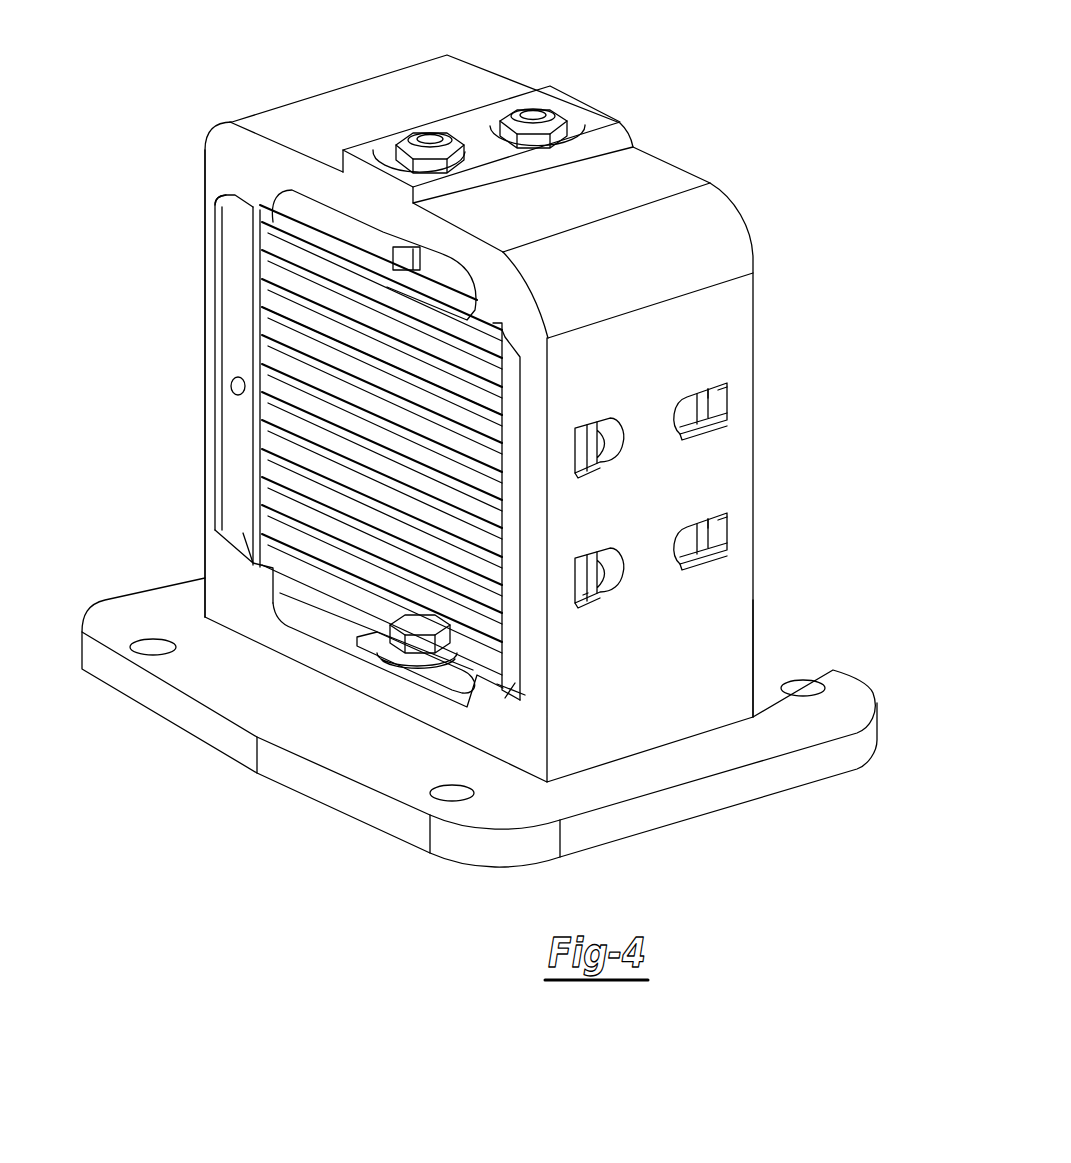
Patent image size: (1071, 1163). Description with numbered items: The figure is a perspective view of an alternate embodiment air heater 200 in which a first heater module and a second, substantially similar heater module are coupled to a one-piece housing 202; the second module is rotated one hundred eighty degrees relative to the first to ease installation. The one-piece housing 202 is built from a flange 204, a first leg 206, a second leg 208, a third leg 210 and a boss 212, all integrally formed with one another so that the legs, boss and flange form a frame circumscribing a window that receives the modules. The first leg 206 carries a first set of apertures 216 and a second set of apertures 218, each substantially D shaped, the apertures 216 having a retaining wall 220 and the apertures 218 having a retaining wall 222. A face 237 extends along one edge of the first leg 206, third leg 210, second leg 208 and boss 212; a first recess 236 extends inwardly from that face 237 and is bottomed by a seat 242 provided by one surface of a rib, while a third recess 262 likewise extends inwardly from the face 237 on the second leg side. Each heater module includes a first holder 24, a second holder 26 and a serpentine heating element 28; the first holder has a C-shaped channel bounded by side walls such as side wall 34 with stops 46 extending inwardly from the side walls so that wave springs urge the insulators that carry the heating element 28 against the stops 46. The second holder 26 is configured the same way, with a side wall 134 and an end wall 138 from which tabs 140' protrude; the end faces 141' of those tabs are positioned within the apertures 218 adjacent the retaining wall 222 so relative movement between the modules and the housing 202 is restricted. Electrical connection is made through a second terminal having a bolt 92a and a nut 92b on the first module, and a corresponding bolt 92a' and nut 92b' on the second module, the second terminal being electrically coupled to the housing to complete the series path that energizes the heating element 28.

The air heater 200 is at (689, 66).
The one-piece housing 202 is at (743, 208).
The flange 204 is at (833, 760).
The first leg 206 is at (733, 660).
The second leg 208 is at (210, 405).
The third leg 210 is at (341, 151).
The boss 212 is at (338, 667).
The first set of apertures 216 is at (618, 433).
The second set of apertures 218 is at (718, 428).
The retaining wall 220 is at (596, 428).
The retaining wall 222 is at (717, 413).
The first recess 236 is at (502, 331).
The face 237 is at (508, 284).
The seat 242 is at (585, 597).
The third recess 262 is at (226, 200).
The first holder 24 is at (500, 549).
The second holder 26 is at (229, 468).
The serpentine heating element 28 is at (311, 230).
The side wall 34 is at (523, 692).
The stops 46 is at (493, 381).
The bolt 92a is at (439, 108).
The nut 92b is at (452, 180).
The bolt 92a' is at (562, 84).
The nut 92b' is at (584, 111).
The side wall 134 is at (243, 533).
The end wall 138 is at (218, 325).
The tabs 140' is at (688, 440).
The end faces 141' is at (771, 447).